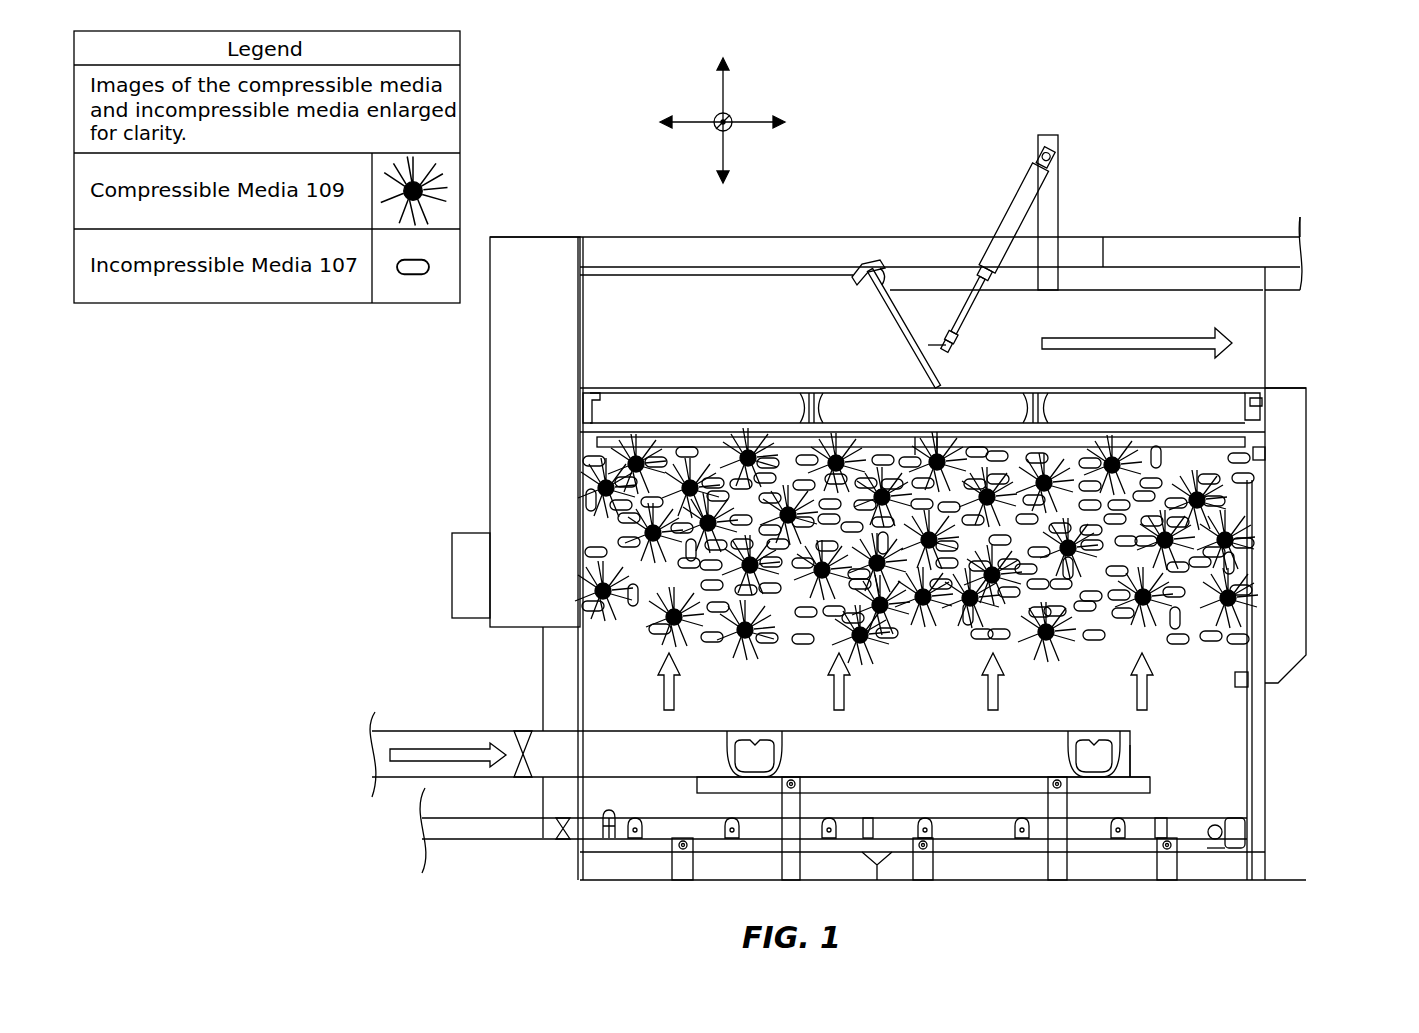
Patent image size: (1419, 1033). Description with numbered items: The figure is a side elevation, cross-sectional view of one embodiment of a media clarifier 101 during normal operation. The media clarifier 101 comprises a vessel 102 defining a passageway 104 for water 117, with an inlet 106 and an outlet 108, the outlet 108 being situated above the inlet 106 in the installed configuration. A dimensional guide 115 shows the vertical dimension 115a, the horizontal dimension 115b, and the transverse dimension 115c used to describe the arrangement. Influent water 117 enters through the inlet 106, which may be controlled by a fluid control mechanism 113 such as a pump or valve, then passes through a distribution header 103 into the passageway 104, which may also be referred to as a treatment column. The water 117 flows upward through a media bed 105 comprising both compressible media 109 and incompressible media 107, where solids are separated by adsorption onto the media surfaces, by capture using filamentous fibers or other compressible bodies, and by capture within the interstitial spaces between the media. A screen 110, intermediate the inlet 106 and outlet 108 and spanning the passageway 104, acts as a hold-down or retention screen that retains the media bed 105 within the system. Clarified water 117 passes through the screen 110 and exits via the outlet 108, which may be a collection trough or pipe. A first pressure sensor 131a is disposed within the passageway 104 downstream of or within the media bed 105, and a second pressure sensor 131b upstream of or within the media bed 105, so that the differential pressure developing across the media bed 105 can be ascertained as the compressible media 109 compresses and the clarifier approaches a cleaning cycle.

The media clarifier 101 is at (569, 177).
The vessel 102 is at (580, 680).
The distribution header 103 is at (917, 766).
The passageway 104 is at (1198, 708).
The media bed 105 is at (1232, 572).
The inlet 106 is at (488, 738).
The incompressible media 107 is at (582, 553).
The outlet 108 is at (1265, 333).
The compressible media 109 is at (580, 488).
The screen 110 is at (718, 420).
The fluid control mechanism 113 is at (523, 735).
The dimensional guide 115 is at (694, 99).
The vertical dimension 115a is at (723, 100).
The horizontal dimension 115b is at (747, 123).
The transverse dimension 115c is at (718, 128).
The water 117 is at (1162, 312).
The first pressure sensor 131a is at (1265, 453).
The second pressure sensor 131b is at (1248, 682).